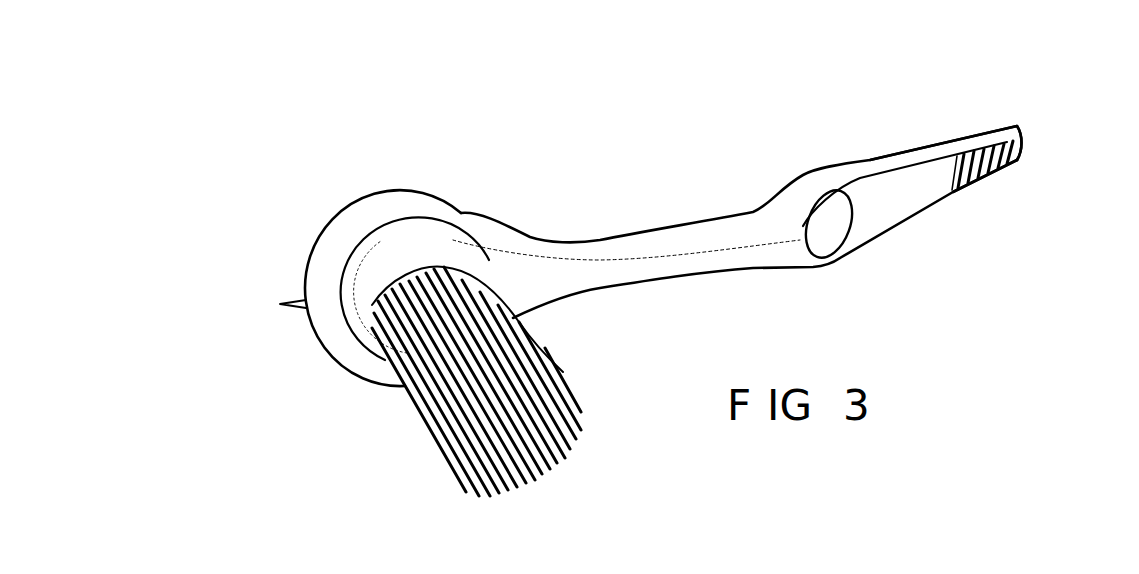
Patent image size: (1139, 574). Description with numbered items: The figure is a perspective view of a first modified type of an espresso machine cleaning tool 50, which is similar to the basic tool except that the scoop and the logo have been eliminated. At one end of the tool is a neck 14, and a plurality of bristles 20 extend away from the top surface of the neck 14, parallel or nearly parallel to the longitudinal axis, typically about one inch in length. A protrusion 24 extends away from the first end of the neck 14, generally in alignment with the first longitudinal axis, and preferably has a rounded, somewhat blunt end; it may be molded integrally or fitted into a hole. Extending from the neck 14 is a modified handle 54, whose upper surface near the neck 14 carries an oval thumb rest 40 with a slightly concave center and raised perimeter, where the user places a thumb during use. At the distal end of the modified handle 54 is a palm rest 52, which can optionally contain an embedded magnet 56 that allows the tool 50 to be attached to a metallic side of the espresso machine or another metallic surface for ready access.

The neck 14 is at (617, 270).
The bristles 20 is at (405, 422).
The protrusion 24 is at (283, 304).
The thumb rest 40 is at (833, 233).
The first modified type of an espresso machine cleaning tool 50 is at (553, 215).
The palm rest 52 is at (993, 170).
The modified handle 54 is at (918, 137).
The embedded magnet 56 is at (1018, 126).